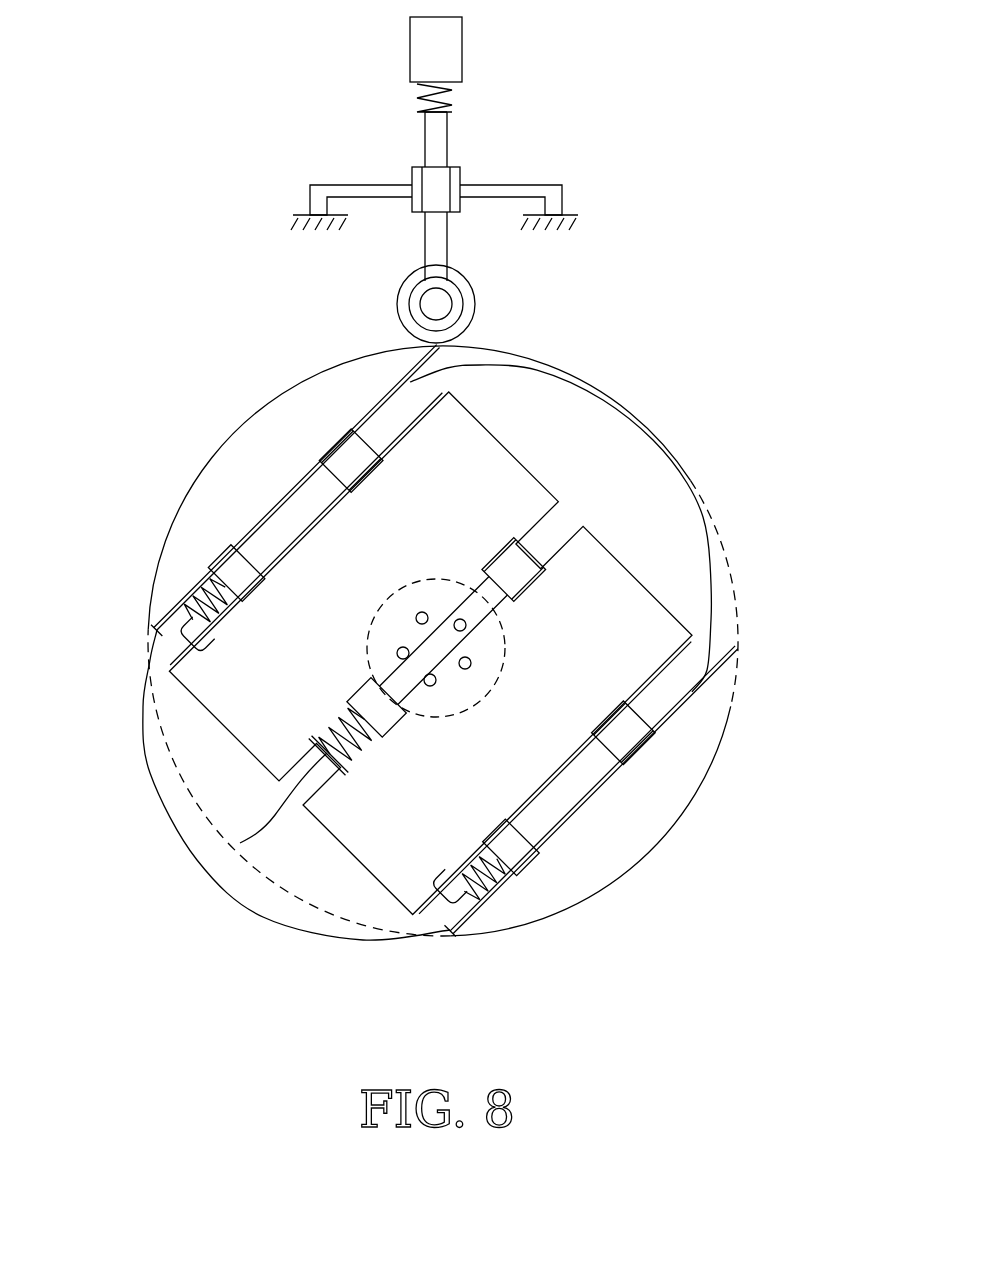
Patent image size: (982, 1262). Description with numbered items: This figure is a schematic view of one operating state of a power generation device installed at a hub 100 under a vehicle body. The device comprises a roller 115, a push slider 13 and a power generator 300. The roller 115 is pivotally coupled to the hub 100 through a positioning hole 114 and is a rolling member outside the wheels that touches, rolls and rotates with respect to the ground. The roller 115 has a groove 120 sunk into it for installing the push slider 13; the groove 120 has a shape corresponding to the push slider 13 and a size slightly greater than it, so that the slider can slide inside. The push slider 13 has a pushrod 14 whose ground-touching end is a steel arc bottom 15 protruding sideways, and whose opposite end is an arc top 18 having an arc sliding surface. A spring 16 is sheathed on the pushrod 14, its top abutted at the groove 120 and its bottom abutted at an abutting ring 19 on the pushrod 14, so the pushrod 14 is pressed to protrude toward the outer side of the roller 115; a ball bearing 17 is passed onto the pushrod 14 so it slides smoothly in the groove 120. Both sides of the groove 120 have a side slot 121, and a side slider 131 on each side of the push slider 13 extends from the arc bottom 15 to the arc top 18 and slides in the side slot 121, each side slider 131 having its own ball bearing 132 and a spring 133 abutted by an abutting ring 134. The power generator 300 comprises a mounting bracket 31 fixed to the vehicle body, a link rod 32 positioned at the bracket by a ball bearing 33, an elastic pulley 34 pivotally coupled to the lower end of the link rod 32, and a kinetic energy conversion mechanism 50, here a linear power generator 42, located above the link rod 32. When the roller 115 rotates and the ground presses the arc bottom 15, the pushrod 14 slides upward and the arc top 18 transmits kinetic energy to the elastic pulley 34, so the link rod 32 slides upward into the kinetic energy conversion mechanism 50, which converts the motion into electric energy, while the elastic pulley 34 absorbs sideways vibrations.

The push slider 13 is at (377, 955).
The pushrod 14 is at (487, 587).
The arc bottom 15 is at (307, 920).
The spring 16 is at (345, 745).
The ball bearing 17 is at (520, 570).
The arc top 18 is at (688, 513).
The abutting ring 19 is at (243, 840).
The mounting bracket 31 is at (537, 192).
The link rod 32 is at (437, 135).
The ball bearing 33 is at (417, 175).
The elastic pulley 34 is at (468, 298).
The linear power generator 42 is at (447, 52).
The kinetic energy conversion mechanism 50 is at (386, 39).
The hub 100 is at (477, 655).
The positioning hole 114 is at (467, 668).
The roller 115 is at (680, 807).
The groove 120 is at (731, 624).
The side slot 121 is at (257, 527).
The side slider 131 is at (292, 513).
The ball bearing 132 is at (355, 465).
The spring 133 is at (200, 592).
The abutting ring 134 is at (210, 648).
The power generator 300 is at (514, 163).